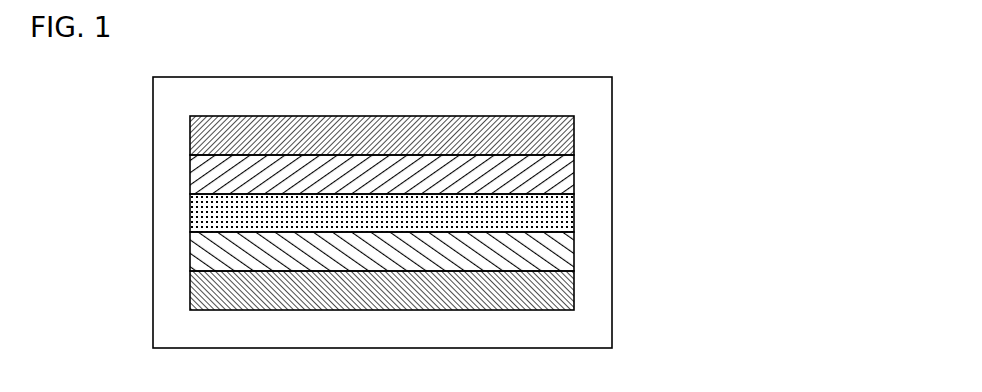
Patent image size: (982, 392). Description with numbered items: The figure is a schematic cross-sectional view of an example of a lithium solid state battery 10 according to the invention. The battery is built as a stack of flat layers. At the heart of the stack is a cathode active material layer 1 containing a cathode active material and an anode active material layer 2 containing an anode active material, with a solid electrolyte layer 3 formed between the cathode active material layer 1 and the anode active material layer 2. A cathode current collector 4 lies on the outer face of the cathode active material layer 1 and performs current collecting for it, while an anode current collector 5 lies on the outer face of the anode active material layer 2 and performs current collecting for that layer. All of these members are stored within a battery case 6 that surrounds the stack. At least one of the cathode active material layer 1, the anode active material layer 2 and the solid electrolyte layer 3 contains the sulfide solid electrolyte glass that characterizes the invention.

The lithium solid state battery 10 is at (599, 39).
The battery case 6 is at (590, 91).
The cathode current collector 4 is at (574, 127).
The cathode active material layer 1 is at (572, 165).
The solid electrolyte layer 3 is at (560, 205).
The anode active material layer 2 is at (560, 243).
The anode current collector 5 is at (562, 278).